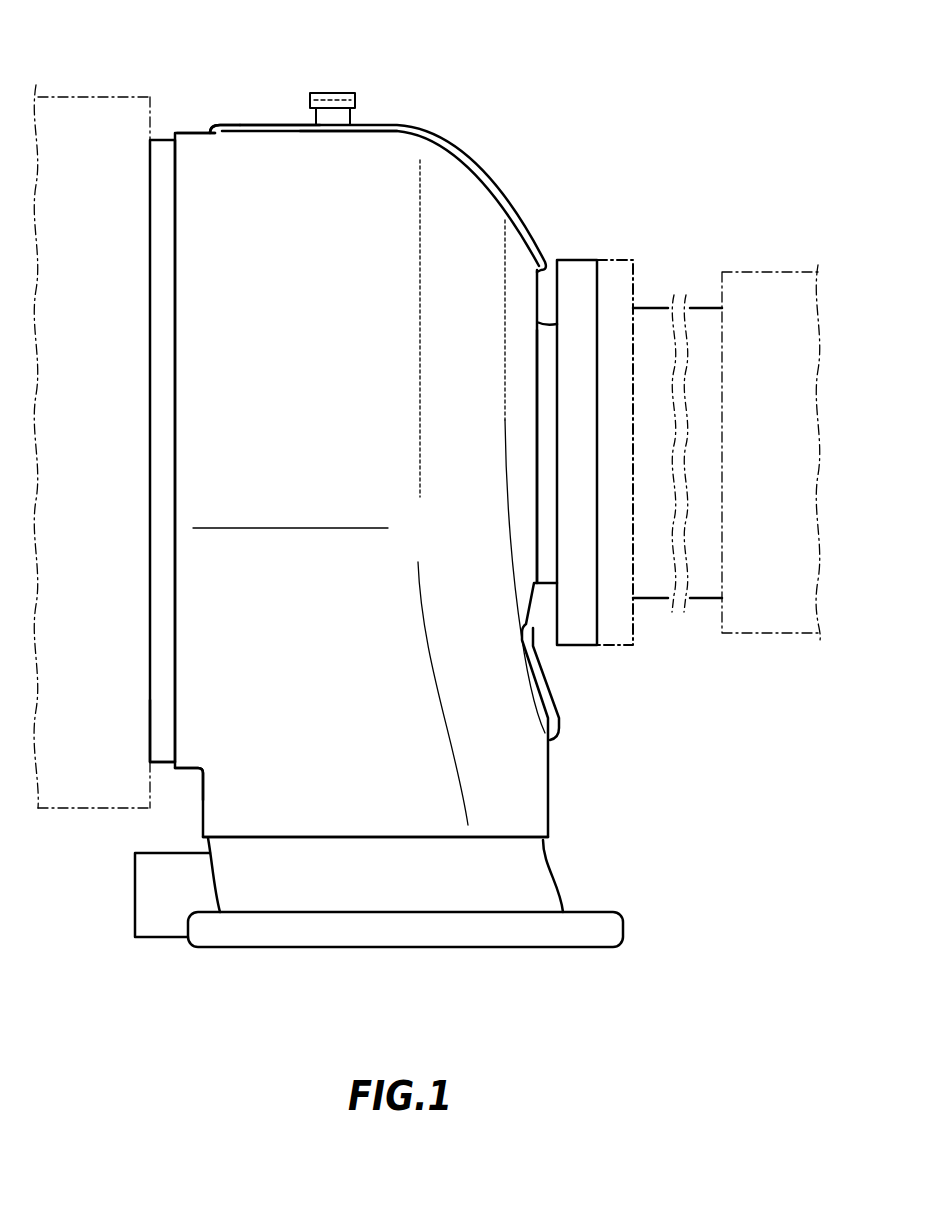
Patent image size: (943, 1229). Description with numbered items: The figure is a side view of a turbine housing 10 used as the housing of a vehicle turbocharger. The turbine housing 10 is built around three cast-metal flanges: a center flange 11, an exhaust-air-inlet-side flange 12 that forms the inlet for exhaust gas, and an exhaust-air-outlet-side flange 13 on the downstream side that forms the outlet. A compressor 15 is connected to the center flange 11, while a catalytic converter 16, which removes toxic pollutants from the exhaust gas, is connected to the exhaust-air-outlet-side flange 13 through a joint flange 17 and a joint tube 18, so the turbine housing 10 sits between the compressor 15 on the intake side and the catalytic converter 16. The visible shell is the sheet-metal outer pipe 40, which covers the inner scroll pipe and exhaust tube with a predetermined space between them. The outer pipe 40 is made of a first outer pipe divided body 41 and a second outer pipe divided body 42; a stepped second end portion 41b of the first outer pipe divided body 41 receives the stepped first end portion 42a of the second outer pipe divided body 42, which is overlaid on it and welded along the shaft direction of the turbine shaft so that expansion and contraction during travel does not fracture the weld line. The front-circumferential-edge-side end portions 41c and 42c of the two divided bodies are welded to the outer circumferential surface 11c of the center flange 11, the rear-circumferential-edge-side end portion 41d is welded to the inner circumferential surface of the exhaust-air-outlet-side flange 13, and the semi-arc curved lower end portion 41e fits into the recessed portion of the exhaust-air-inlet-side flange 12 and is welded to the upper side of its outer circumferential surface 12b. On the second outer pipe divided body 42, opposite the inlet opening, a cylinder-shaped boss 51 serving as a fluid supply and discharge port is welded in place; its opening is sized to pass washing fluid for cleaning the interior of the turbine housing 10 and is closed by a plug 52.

The turbine housing 10 is at (426, 93).
The center flange 11 is at (165, 138).
The outer circumferential surface of the center flange 11c is at (160, 703).
The exhaust-air-inlet-side flange 12 is at (334, 947).
The outer circumferential surface of the exhaust-air-inlet-side flange 12b is at (385, 848).
The exhaust-air-outlet-side flange 13 is at (565, 260).
The compressor 15 is at (85, 95).
The catalytic converter 16 is at (787, 270).
The joint flange 17 is at (633, 275).
The joint tube 18 is at (705, 306).
The outer pipe 40 is at (418, 519).
The first outer pipe divided body 41 is at (549, 778).
The second end portion of the first outer pipe divided body 41b is at (370, 128).
The front-circumferential-edge-side end portion of the first outer pipe divided body 41c is at (178, 772).
The rear-circumferential-edge-side end portion of the first outer pipe divided body 41d is at (547, 560).
The lower end portion of the first outer pipe divided body 41e is at (435, 818).
The second outer pipe divided body 42 is at (467, 150).
The first end portion of the second outer pipe divided body 42a is at (277, 122).
The front-circumferential-edge-side end portion of the second outer pipe divided bod 42c is at (210, 130).
The cylinder-shaped boss 51 is at (353, 118).
The plug 52 is at (322, 92).